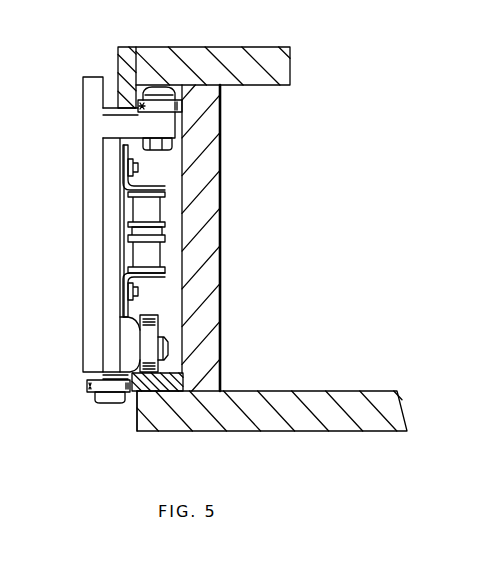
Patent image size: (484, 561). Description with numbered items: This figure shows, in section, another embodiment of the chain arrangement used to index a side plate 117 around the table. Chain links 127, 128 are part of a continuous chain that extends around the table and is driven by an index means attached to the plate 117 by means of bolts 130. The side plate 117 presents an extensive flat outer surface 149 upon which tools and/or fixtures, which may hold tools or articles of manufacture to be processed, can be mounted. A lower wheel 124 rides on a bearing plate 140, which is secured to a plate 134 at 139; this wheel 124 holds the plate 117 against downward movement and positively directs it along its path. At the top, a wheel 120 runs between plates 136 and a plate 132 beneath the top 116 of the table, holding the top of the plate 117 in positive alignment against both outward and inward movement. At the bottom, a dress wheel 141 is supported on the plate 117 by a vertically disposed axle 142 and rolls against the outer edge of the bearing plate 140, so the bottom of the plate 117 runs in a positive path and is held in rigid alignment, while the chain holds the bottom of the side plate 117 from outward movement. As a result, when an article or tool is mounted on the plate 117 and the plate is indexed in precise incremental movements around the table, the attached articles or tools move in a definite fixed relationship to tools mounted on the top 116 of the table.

The top of the table 116 is at (178, 54).
The plates 136 is at (123, 59).
The plate 132 is at (222, 101).
The plate 134 is at (192, 420).
The bearing plate 140 is at (185, 374).
The securing location 139 is at (137, 402).
The flat outer surface 149 is at (83, 255).
The side plate 117 is at (93, 277).
The wheel 120 is at (140, 106).
The chain link 127 is at (160, 210).
The chain link 128 is at (157, 256).
The bolts 130 is at (138, 291).
The lower wheel 124 is at (156, 323).
The dress wheel 141 is at (88, 387).
The axle 142 is at (103, 403).